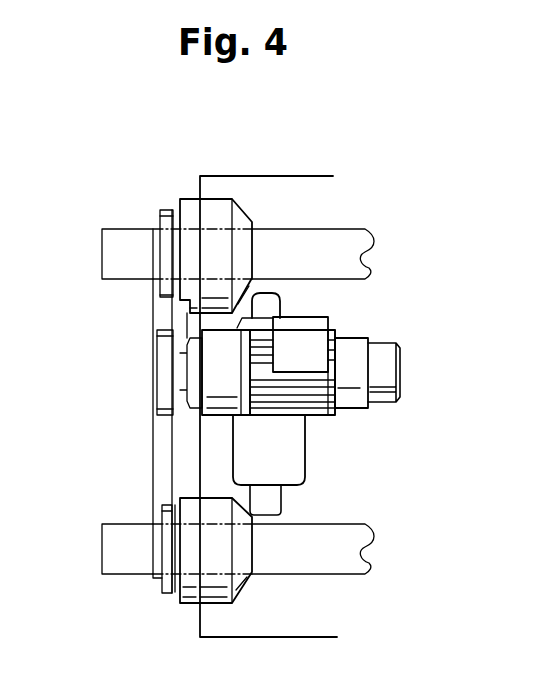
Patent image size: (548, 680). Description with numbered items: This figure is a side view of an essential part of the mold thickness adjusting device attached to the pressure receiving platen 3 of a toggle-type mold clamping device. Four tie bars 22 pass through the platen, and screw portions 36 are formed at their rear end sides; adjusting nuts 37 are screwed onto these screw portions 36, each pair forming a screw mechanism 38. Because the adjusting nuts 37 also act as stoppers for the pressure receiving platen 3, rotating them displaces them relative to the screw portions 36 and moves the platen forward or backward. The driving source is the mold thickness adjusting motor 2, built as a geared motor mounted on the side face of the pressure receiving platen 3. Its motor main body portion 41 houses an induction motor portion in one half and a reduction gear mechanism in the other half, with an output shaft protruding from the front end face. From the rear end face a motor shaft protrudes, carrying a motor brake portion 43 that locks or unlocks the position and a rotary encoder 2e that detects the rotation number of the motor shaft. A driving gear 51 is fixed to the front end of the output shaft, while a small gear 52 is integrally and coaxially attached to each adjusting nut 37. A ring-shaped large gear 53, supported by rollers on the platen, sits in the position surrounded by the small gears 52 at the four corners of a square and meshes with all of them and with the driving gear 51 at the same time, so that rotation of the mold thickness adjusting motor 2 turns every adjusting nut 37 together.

The mold thickness adjusting motor 2 is at (345, 315).
The rotary encoder 2e is at (380, 342).
The pressure receiving platen 3 is at (260, 176).
The tie bar 22 is at (327, 228).
The screw portion 36 is at (112, 228).
The adjusting nut 37 is at (185, 198).
The screw mechanism 38 is at (143, 305).
The motor main body portion 41 is at (320, 416).
The motor brake portion 43 is at (358, 408).
The driving gear 51 is at (155, 398).
The small gear 52 is at (167, 210).
The large gear 53 is at (150, 453).